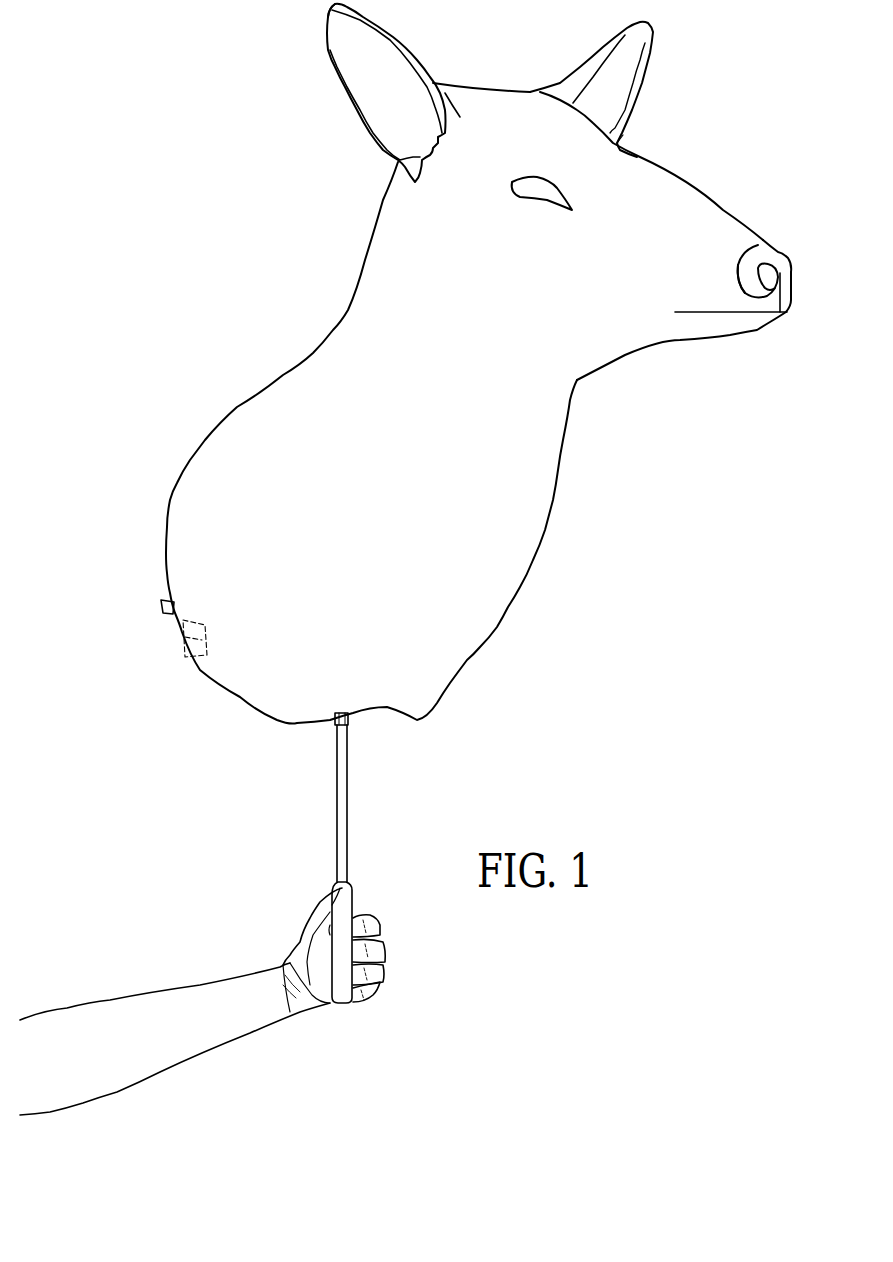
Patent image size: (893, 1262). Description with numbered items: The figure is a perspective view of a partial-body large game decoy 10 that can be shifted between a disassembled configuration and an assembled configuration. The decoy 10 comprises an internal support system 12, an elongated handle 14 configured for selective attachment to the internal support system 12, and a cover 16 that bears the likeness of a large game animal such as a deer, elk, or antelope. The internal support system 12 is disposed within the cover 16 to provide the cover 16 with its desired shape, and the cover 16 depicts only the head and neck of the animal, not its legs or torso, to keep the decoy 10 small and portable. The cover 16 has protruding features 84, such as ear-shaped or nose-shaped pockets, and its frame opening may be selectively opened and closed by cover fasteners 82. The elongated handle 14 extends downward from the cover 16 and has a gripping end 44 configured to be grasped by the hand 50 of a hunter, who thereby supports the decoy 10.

The partial-body large game decoy 10 is at (236, 243).
The internal support system 12 is at (160, 606).
The elongated handle 14 is at (340, 815).
The cover 16 is at (543, 468).
The gripping end 44 is at (353, 990).
The hand 50 is at (298, 950).
The cover fasteners 82 is at (190, 640).
The protruding features 84 is at (377, 40).